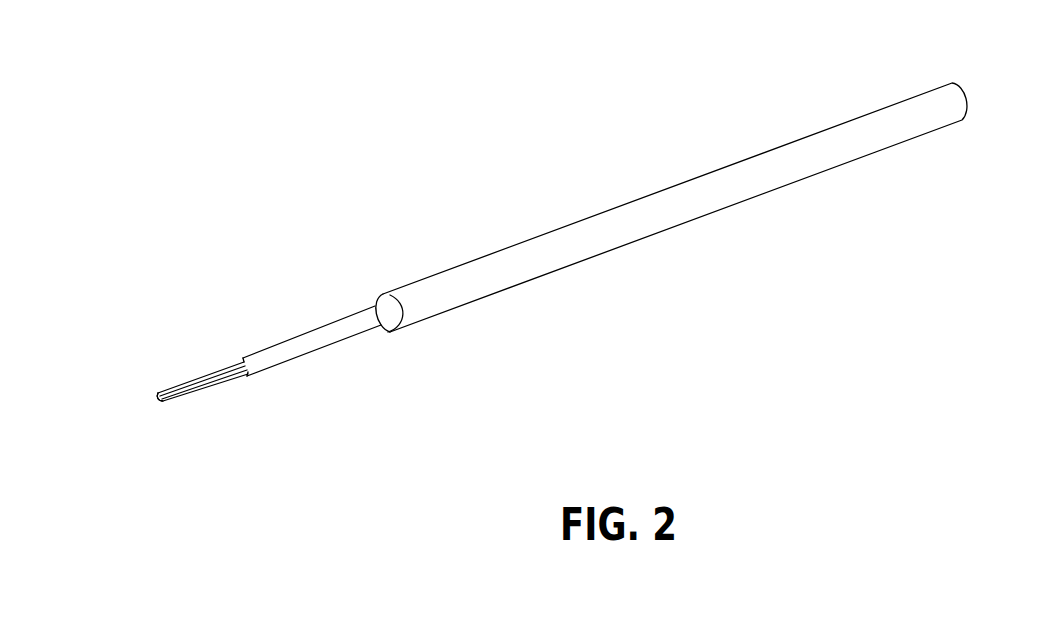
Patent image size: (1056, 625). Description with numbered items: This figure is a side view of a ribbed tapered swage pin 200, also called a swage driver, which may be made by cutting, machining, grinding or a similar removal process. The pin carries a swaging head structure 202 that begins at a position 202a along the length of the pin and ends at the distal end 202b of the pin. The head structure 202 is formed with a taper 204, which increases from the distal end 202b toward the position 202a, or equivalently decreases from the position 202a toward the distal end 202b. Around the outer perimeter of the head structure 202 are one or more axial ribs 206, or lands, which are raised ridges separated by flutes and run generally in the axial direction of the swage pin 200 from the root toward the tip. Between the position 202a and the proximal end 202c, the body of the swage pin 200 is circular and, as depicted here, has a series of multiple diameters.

The swage pin 200 is at (552, 242).
The swaging head structure 202 is at (552, 242).
The position 202a is at (246, 391).
The distal end 202b is at (169, 406).
The proximal end 202c is at (965, 85).
The taper 204 is at (172, 385).
The axial ribs 206 is at (158, 400).